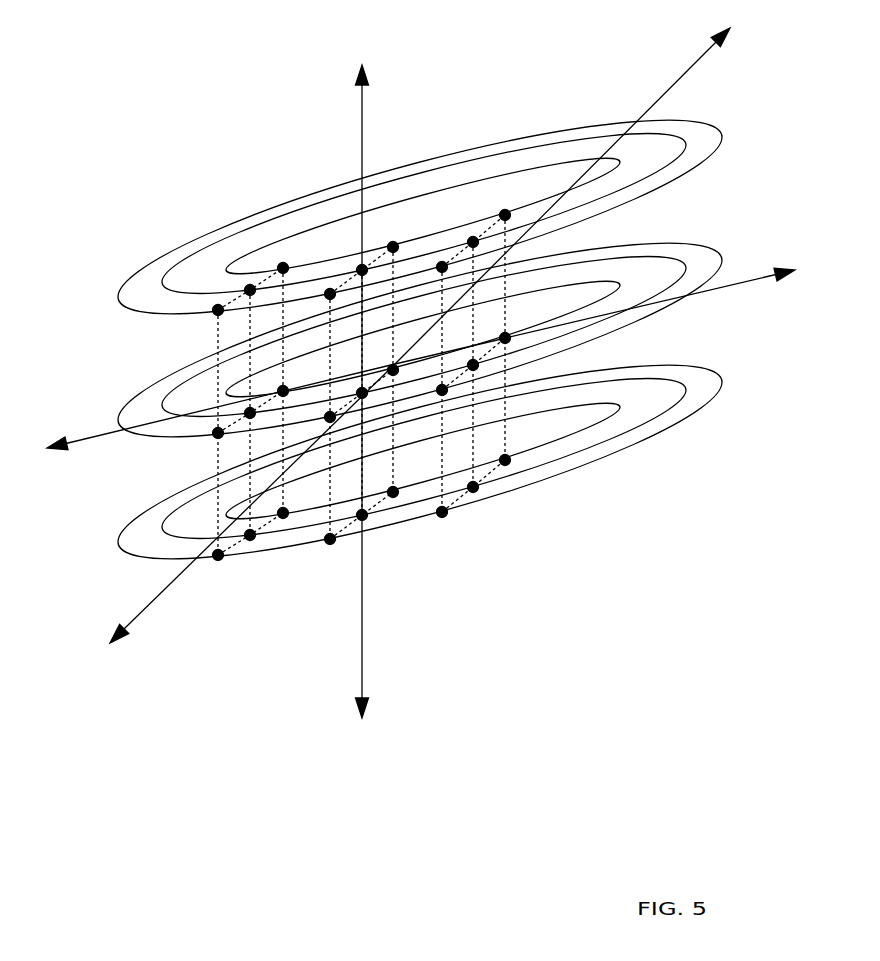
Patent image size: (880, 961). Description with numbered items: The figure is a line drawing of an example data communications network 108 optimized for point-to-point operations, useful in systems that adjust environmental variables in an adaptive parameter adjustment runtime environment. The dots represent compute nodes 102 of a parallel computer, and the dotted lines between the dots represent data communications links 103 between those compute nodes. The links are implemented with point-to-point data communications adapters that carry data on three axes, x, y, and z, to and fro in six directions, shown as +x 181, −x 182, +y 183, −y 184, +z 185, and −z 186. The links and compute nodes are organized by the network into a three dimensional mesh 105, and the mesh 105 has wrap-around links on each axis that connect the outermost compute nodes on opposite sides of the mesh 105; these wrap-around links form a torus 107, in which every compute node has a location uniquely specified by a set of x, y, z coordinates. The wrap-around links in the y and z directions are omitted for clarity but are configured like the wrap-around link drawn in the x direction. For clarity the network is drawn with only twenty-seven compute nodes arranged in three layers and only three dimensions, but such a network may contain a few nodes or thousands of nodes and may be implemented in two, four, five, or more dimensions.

The compute nodes 102 is at (442, 513).
The data communications links 103 is at (218, 342).
The three dimensional mesh 105 is at (285, 250).
The torus 107 is at (207, 225).
The data communications network 108 is at (322, 938).
The +x direction 181 is at (830, 298).
The −x direction 182 is at (44, 486).
The +y direction 183 is at (772, 55).
The −y direction 184 is at (105, 691).
The +z direction 185 is at (378, 55).
The −z direction 186 is at (380, 778).